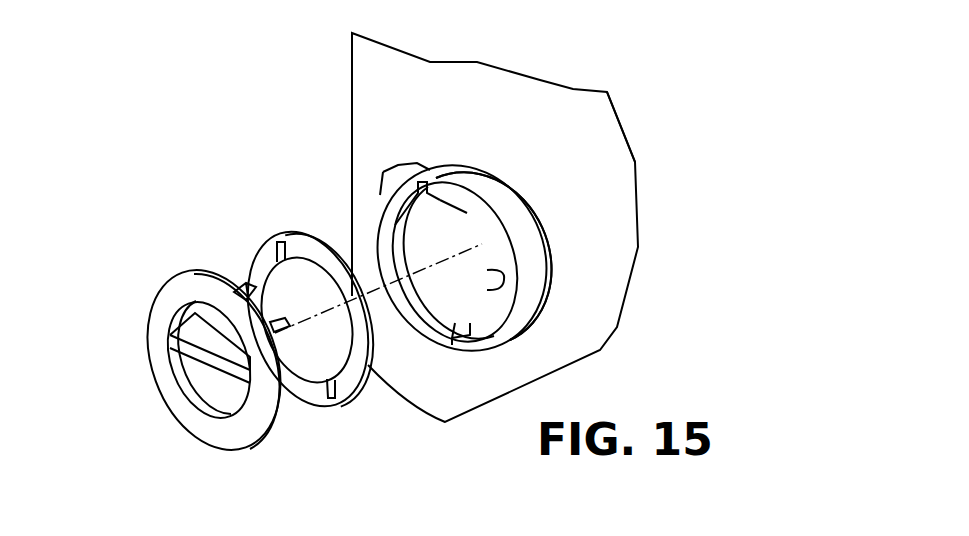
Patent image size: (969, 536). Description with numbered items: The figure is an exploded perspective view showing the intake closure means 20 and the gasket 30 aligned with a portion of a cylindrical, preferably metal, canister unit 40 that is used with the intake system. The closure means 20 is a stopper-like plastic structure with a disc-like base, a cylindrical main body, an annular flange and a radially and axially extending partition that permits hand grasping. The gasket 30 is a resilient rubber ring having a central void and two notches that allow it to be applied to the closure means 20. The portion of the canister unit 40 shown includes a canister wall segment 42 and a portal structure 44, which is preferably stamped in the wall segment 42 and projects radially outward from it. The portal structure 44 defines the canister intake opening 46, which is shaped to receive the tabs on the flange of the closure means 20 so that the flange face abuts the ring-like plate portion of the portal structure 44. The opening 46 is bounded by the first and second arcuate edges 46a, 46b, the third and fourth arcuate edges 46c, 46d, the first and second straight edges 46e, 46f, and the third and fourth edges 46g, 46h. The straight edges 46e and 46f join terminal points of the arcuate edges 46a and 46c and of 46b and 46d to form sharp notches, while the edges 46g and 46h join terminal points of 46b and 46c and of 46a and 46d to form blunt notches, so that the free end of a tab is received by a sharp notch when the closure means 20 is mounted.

The intake closure means 20 is at (180, 428).
The gasket 30 is at (327, 403).
The canister unit 40 is at (347, 100).
The canister wall segment 42 is at (605, 135).
The portal structure 44 is at (526, 221).
The canister intake opening 46 is at (452, 290).
The first arcuate edge 46a is at (403, 202).
The second arcuate edge 46b is at (470, 345).
The third arcuate edge 46c is at (467, 213).
The fourth arcuate edge 46d is at (393, 260).
The first straight edge 46e is at (421, 192).
The second straight edge 46f is at (452, 338).
The third edge 46g is at (500, 291).
The fourth edge 46h is at (397, 187).